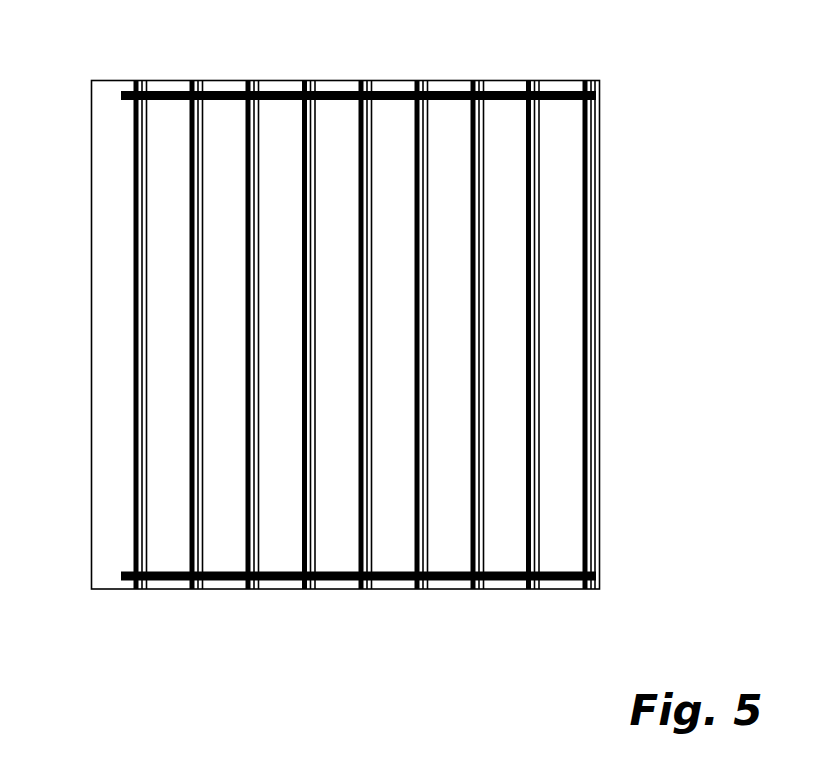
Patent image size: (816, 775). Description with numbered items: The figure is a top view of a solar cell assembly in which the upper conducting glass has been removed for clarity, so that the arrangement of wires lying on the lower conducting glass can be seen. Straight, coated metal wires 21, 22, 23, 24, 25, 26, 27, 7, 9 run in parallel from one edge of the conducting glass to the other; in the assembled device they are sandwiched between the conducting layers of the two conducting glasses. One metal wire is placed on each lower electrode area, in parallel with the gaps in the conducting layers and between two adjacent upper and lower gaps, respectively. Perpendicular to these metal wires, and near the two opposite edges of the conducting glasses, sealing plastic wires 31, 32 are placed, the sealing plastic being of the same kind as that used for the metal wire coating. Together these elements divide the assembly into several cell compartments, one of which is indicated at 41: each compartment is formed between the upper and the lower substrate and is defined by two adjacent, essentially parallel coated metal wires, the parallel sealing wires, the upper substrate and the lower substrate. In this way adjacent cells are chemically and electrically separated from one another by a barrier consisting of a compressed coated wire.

The cell compartment 41 is at (172, 353).
The sealing plastic wire 31 is at (563, 93).
The sealing plastic wire 32 is at (565, 571).
The coated metal wire 21 is at (135, 593).
The coated metal wire 22 is at (195, 593).
The coated metal wire 23 is at (248, 593).
The coated metal wire 24 is at (306, 593).
The coated metal wire 25 is at (362, 593).
The coated metal wire 26 is at (418, 593).
The coated metal wire 27 is at (474, 593).
The coated metal wire 7 is at (528, 593).
The coated metal wire 9 is at (586, 593).